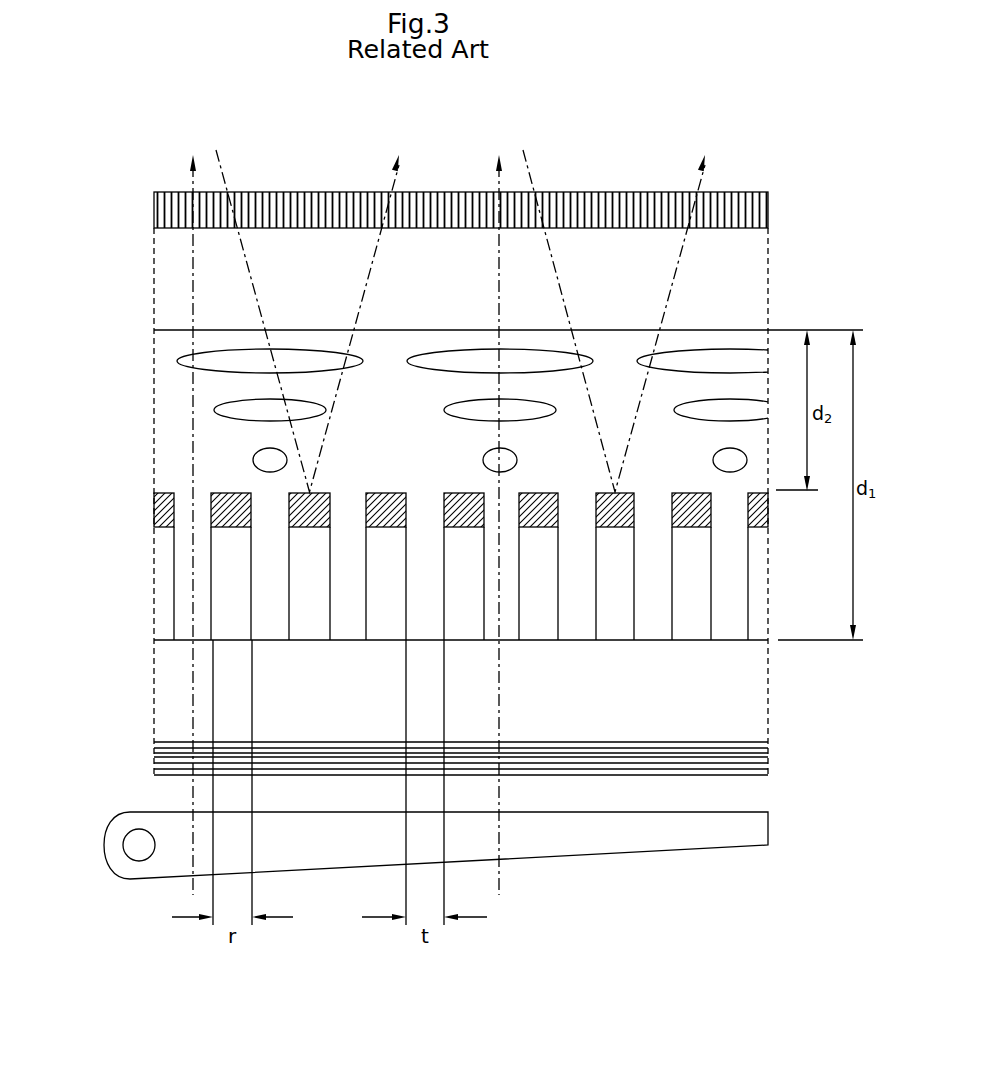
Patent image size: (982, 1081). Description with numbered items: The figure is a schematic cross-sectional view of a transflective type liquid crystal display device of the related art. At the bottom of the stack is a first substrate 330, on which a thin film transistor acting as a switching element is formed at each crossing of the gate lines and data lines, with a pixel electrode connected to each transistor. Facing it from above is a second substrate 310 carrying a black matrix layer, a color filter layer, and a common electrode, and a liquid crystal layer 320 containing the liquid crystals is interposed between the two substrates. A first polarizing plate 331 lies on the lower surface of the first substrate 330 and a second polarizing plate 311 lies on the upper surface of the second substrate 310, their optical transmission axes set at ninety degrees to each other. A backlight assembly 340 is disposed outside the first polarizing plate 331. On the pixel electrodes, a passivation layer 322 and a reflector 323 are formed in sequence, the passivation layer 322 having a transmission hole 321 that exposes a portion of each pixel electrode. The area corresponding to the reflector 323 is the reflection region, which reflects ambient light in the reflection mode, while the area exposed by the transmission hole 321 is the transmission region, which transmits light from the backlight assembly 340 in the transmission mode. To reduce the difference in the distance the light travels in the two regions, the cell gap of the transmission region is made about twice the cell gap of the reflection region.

The second substrate 310 is at (757, 262).
The second polarizing plate 311 is at (757, 209).
The liquid crystal layer 320 is at (142, 330).
The transmission hole 321 is at (412, 561).
The passivation layer 322 is at (228, 580).
The reflector 323 is at (229, 518).
The first substrate 330 is at (506, 782).
The first polarizing plate 331 is at (752, 757).
The backlight assembly 340 is at (94, 812).